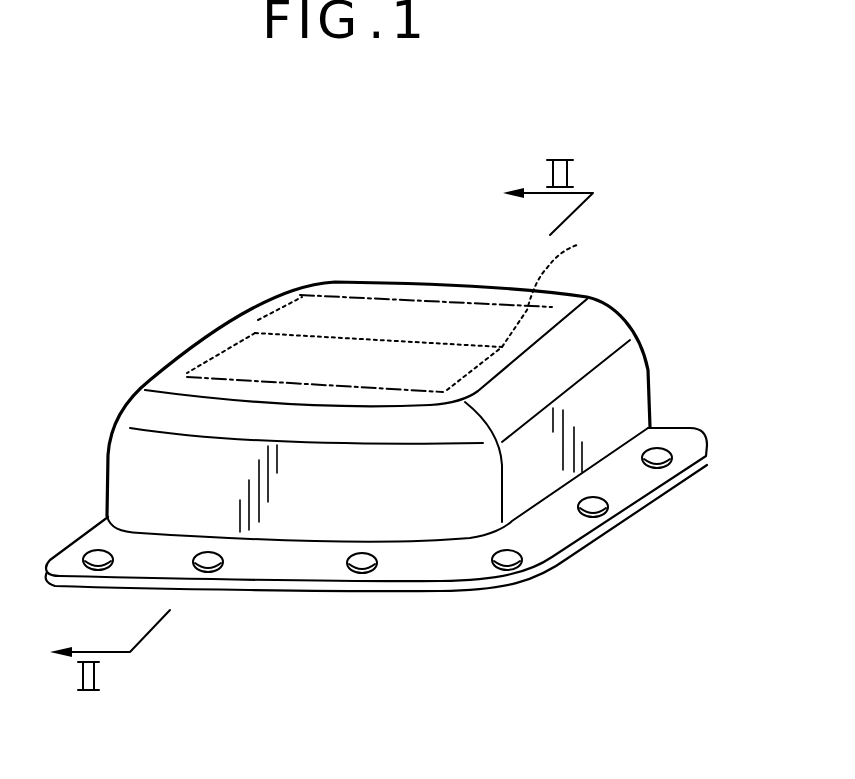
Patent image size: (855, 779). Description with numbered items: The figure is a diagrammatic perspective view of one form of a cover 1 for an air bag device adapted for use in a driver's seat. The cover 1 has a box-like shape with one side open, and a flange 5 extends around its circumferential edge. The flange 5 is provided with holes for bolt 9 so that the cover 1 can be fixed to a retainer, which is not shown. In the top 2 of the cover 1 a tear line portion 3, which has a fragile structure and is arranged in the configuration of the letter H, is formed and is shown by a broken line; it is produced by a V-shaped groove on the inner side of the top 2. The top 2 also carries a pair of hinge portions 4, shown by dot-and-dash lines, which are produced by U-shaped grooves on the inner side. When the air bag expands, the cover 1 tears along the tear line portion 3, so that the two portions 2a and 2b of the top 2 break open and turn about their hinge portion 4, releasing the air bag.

The cover 1 is at (170, 289).
The top of the cover 2 is at (573, 293).
The portion of the top adapted to be break-opened 2a is at (372, 310).
The portion of the top adapted to be break-opened 2b is at (230, 359).
The tear line portion 3 is at (258, 320).
The hinge portion 4 is at (448, 300).
The flange 5 is at (673, 437).
The hole for bolt 9 is at (597, 517).